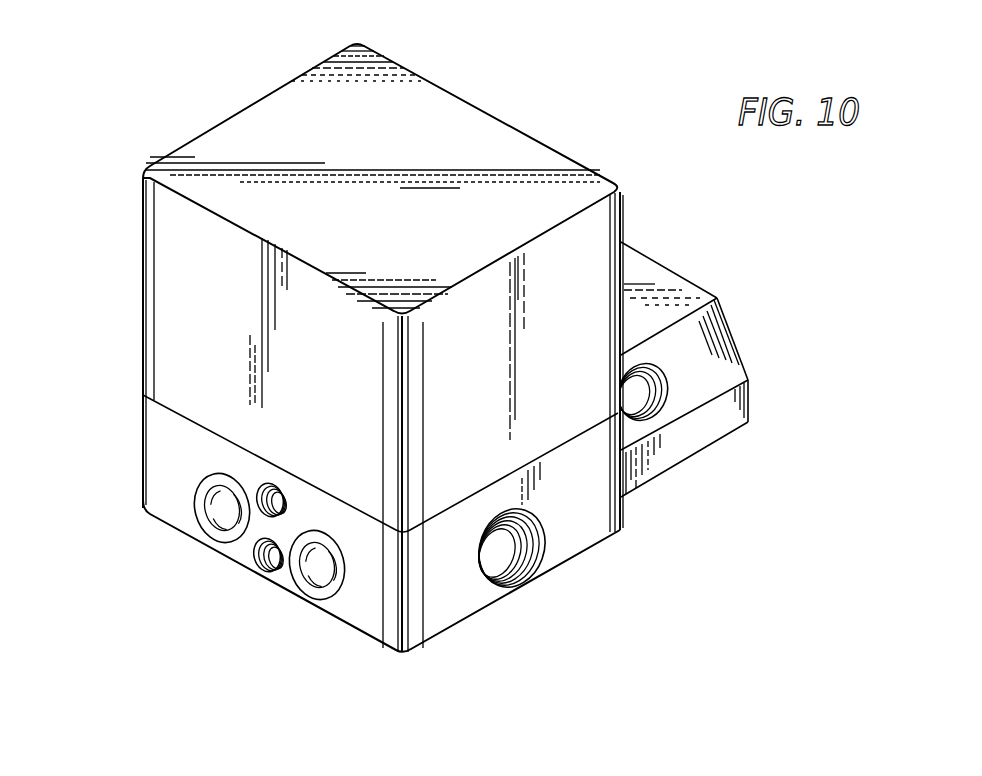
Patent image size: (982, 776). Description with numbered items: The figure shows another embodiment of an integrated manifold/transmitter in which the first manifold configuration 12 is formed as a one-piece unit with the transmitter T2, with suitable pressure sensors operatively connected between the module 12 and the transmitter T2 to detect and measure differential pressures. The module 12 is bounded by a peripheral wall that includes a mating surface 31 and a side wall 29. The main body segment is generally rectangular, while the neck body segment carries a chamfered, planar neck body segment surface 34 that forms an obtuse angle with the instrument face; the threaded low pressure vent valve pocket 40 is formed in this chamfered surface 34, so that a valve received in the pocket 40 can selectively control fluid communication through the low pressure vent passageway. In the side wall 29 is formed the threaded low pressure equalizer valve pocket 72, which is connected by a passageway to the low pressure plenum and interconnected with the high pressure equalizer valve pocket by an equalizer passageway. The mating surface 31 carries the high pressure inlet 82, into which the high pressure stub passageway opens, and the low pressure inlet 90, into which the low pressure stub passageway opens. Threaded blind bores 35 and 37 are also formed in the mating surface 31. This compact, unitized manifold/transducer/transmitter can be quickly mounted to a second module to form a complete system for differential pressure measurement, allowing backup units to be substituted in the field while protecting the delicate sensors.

The transmitter T2 is at (241, 102).
The first manifold configuration 12 is at (742, 318).
The side wall 29 is at (592, 513).
The mating surface 31 is at (157, 465).
The neck body segment surface 34 is at (728, 358).
The threaded blind bore 35 is at (277, 490).
The threaded blind bore 37 is at (262, 565).
The low pressure vent valve pocket 40 is at (656, 392).
The low pressure equalizer valve pocket 72 is at (515, 558).
The high pressure inlet 82 is at (230, 503).
The low pressure inlet 90 is at (330, 563).